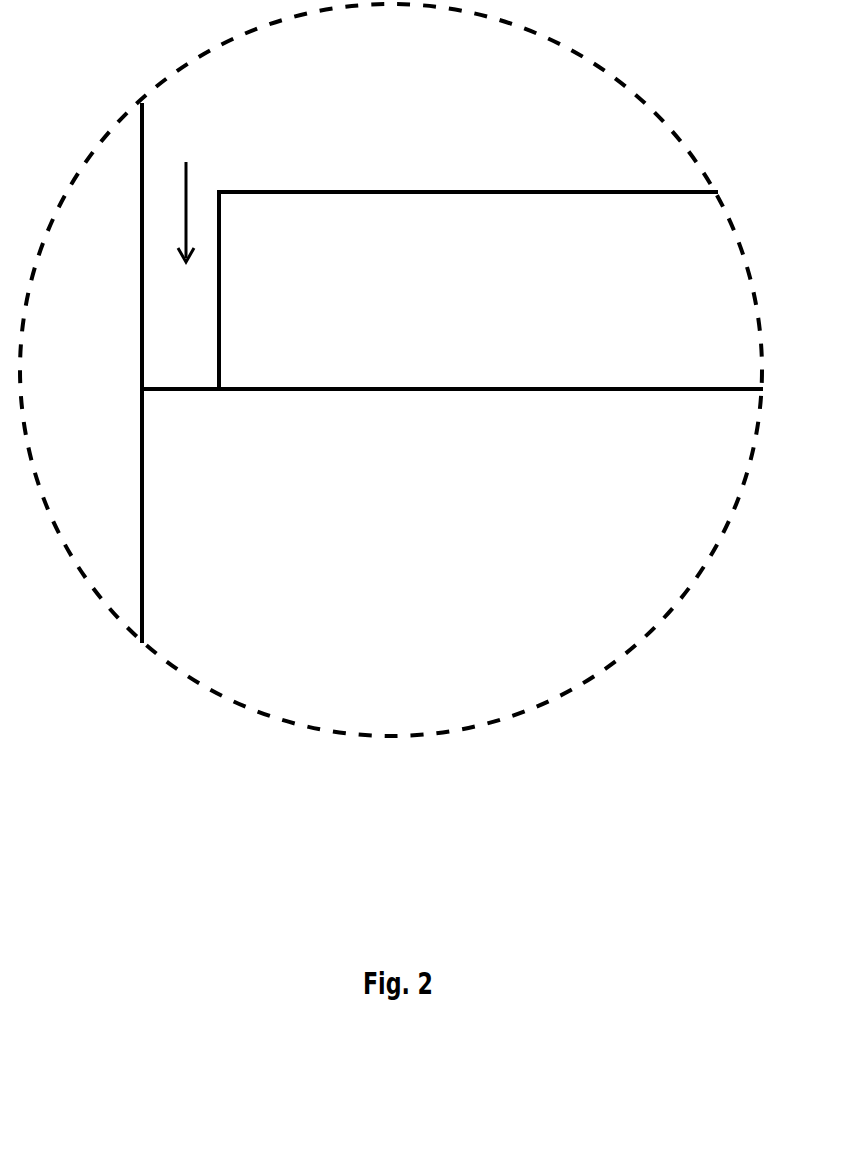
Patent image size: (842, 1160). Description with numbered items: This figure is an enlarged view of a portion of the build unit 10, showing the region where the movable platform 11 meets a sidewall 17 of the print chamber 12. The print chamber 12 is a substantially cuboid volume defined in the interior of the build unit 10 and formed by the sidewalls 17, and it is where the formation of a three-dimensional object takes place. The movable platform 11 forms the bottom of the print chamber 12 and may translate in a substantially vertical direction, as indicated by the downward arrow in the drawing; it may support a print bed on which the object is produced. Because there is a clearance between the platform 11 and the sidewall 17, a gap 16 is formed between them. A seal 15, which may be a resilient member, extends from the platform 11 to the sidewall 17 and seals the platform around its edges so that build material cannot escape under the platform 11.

The build unit 10 is at (94, 370).
The movable platform 11 is at (474, 308).
The print chamber 12 is at (474, 130).
The seal 15 is at (182, 391).
The gap 16 is at (188, 200).
The sidewall 17 is at (140, 195).